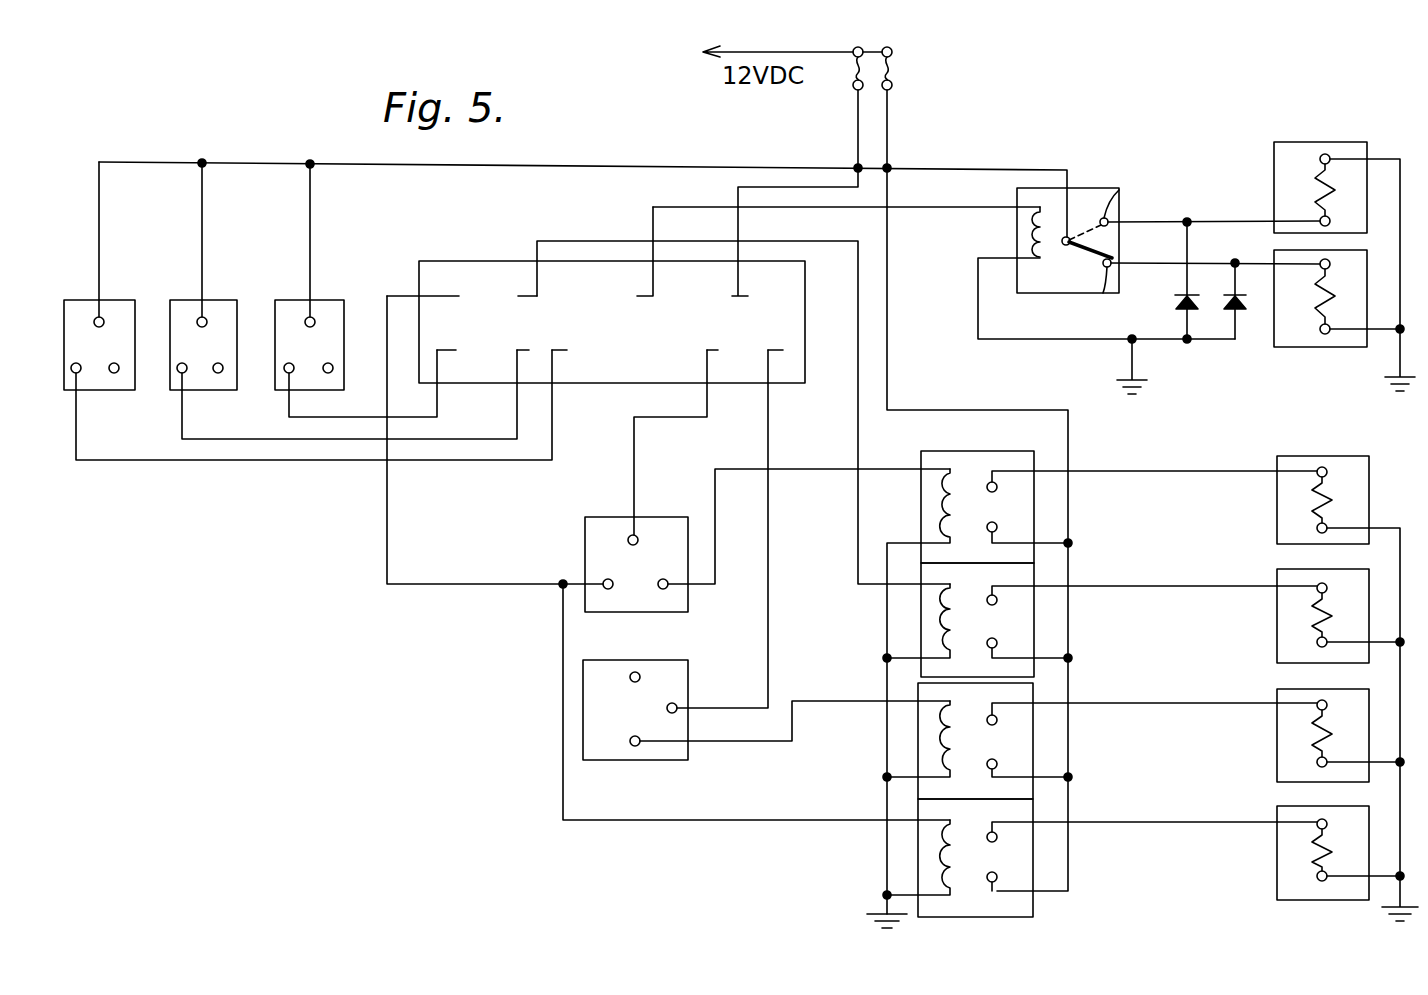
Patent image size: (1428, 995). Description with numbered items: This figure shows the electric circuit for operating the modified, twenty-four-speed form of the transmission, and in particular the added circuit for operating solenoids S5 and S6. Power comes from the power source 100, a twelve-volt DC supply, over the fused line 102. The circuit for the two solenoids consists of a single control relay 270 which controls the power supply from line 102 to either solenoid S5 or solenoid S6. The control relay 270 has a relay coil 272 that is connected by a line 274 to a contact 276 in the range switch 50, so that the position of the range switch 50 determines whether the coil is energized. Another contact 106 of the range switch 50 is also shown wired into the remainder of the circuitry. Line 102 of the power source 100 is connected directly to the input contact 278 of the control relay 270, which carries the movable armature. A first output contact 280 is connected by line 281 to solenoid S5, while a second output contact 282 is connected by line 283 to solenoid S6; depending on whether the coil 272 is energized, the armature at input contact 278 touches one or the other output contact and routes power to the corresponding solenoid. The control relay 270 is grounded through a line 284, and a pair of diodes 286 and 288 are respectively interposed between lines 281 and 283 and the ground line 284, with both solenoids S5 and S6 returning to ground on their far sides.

The power source 100 is at (777, 52).
The line 102 is at (892, 117).
The range switch 50 is at (447, 268).
The contact 276 is at (652, 300).
The switch contact 106 is at (738, 300).
The line 274 is at (963, 207).
The relay coil 272 is at (1032, 238).
The control relay 270 is at (1080, 192).
The input contact 278 is at (1062, 248).
The first output contact 280 is at (1119, 190).
The second output contact 282 is at (1103, 293).
The line 281 is at (1160, 221).
The line 283 is at (1156, 255).
The ground line 284 is at (1020, 341).
The diode 286 is at (1180, 310).
The diode 288 is at (1243, 318).
The solenoid S5 is at (1290, 146).
The solenoid S6 is at (1306, 340).